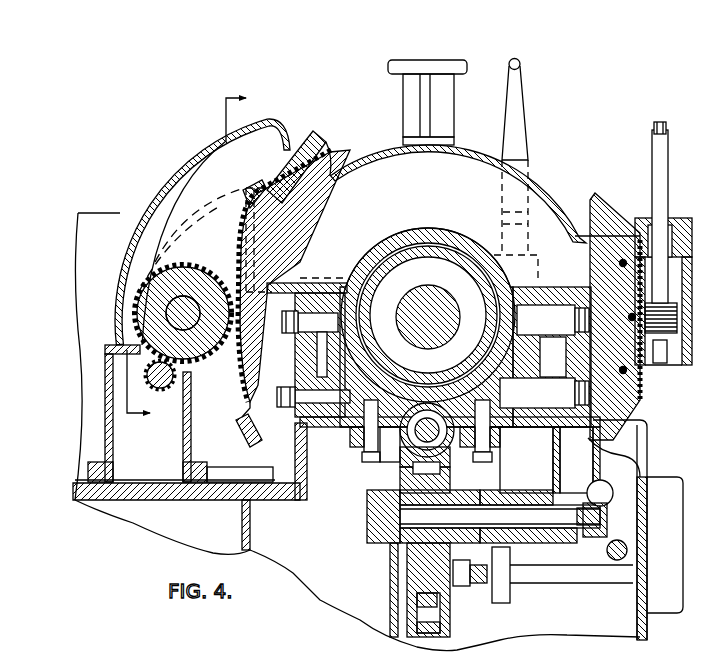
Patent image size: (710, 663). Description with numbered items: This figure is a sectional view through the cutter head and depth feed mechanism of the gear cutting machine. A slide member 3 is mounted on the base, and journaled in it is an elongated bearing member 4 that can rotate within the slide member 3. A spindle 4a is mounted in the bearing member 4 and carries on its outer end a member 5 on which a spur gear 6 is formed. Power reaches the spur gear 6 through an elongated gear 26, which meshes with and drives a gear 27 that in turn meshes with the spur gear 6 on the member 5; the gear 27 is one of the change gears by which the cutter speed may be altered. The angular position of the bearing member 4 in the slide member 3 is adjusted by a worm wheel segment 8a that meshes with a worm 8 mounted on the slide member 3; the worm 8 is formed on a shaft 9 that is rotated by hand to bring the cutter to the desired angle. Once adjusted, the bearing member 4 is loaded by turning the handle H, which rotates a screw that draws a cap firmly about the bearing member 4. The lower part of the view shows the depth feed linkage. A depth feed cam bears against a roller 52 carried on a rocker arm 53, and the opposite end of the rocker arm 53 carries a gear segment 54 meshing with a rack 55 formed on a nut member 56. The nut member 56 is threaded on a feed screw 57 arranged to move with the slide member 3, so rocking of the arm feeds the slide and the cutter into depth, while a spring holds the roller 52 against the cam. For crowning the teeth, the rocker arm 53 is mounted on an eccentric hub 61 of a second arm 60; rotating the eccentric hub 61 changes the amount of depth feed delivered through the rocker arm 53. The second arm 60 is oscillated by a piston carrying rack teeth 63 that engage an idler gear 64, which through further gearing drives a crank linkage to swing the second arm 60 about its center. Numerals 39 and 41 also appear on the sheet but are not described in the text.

The slide member 3 is at (440, 240).
The elongated bearing member 4 is at (391, 262).
The spindle 4a is at (432, 340).
The member 5 is at (196, 255).
The spur gear 6 is at (240, 388).
The worm 8 is at (663, 340).
The worm wheel segment 8a is at (628, 393).
The shaft 9 is at (662, 176).
The elongated gear 26 is at (160, 383).
The gear 27 is at (190, 266).
The base 39 is at (147, 654).
The support 41 is at (351, 658).
The roller 52 is at (415, 603).
The rocker arm 53 is at (443, 483).
The gear segment 54 is at (400, 470).
The rack 55 is at (405, 455).
The nut member 56 is at (410, 443).
The feed screw 57 is at (412, 430).
The second arm 60 is at (458, 583).
The eccentric hub 61 is at (407, 535).
The rack teeth 63 is at (597, 486).
The idler gear 64 is at (594, 540).
The handle H is at (514, 100).